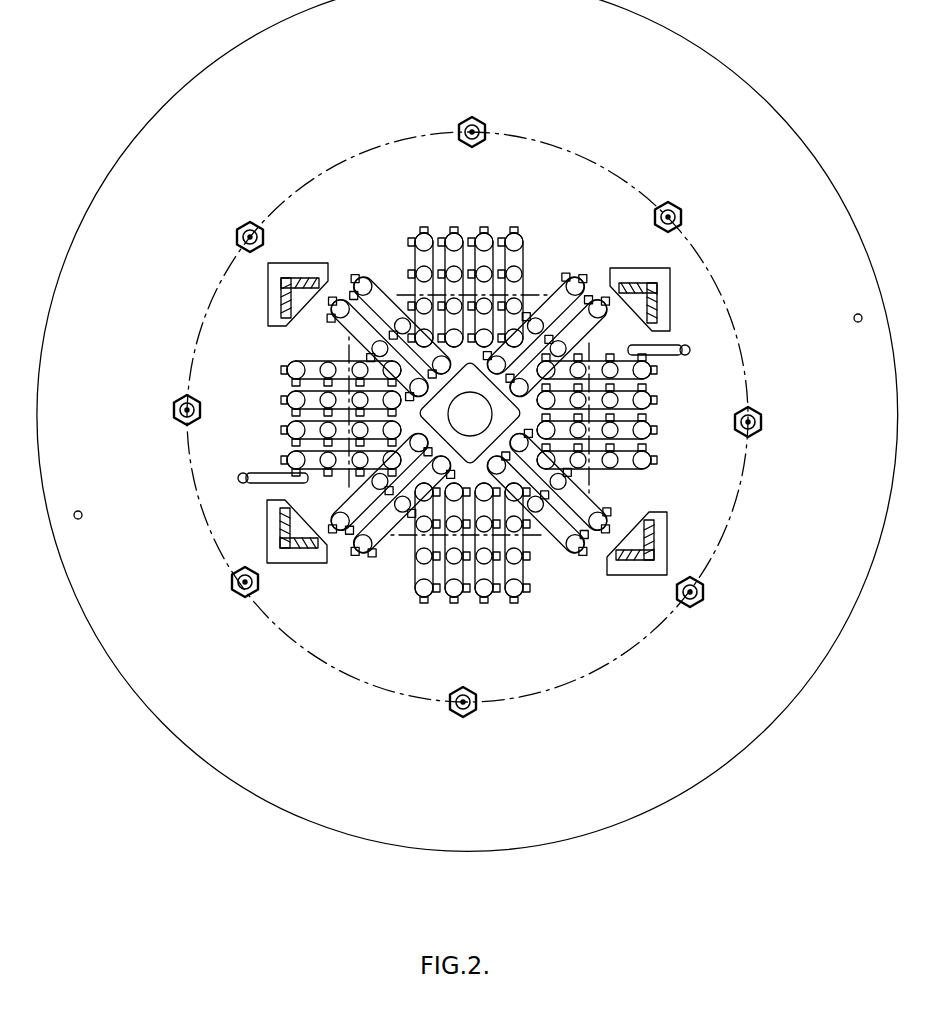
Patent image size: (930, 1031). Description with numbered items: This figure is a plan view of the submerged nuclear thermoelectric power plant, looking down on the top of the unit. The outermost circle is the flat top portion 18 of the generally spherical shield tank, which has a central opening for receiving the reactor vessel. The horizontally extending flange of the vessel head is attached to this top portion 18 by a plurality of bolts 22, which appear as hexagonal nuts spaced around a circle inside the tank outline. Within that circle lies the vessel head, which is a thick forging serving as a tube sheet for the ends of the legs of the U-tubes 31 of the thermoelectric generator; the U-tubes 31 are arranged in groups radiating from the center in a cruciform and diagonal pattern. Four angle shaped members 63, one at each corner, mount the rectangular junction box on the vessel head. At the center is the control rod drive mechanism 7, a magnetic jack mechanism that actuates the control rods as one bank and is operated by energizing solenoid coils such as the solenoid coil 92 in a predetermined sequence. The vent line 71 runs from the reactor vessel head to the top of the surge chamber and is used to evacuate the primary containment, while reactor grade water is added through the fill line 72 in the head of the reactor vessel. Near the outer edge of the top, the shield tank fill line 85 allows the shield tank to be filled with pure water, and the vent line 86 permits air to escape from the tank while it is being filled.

The flat top portion 18 is at (237, 772).
The bolts 22 is at (484, 128).
The angle shaped members 63 is at (290, 306).
The U-tubes 31 is at (516, 598).
The control rod drive mechanism 7 is at (477, 424).
The solenoid coil 92 is at (501, 404).
The vent line 71 is at (685, 356).
The fill line 72 is at (243, 473).
The shield tank fill line 85 is at (855, 315).
The vent line 86 is at (80, 519).